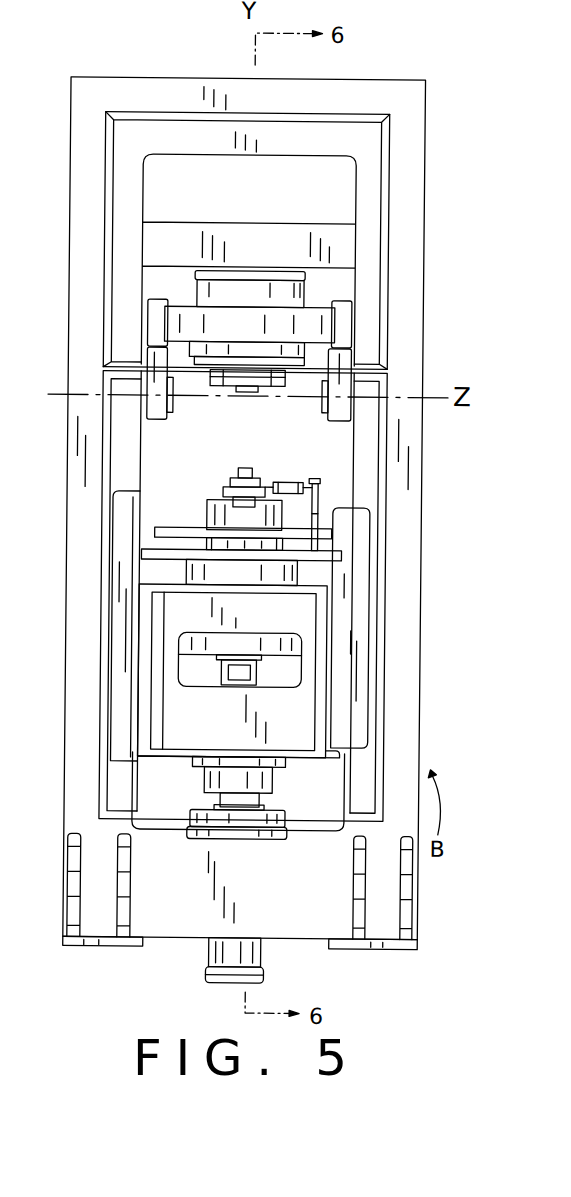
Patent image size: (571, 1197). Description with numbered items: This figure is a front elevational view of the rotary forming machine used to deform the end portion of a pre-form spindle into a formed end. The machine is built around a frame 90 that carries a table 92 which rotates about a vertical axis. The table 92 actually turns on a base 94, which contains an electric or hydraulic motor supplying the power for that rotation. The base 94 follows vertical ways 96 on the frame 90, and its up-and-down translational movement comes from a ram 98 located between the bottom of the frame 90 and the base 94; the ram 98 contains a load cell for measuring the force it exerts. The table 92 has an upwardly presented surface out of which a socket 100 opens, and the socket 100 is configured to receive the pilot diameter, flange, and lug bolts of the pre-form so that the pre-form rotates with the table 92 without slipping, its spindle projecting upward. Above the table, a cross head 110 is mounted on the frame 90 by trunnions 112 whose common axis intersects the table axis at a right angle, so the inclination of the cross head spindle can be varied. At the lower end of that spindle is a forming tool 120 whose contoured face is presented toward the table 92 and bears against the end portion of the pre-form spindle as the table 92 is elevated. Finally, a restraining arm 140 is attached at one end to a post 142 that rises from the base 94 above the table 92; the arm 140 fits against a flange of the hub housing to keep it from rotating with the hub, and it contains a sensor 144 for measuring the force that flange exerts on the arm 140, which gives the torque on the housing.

The frame 90 is at (407, 108).
The table 92 is at (177, 527).
The base 94 is at (288, 573).
The vertical ways 96 is at (407, 653).
The ram 98 is at (260, 953).
The socket 100 is at (222, 497).
The cross head 110 is at (298, 290).
The trunnions 112 is at (170, 398).
The forming tool 120 is at (250, 393).
The restraining arm 140 is at (320, 487).
The post 142 is at (317, 505).
The sensor 144 is at (291, 482).